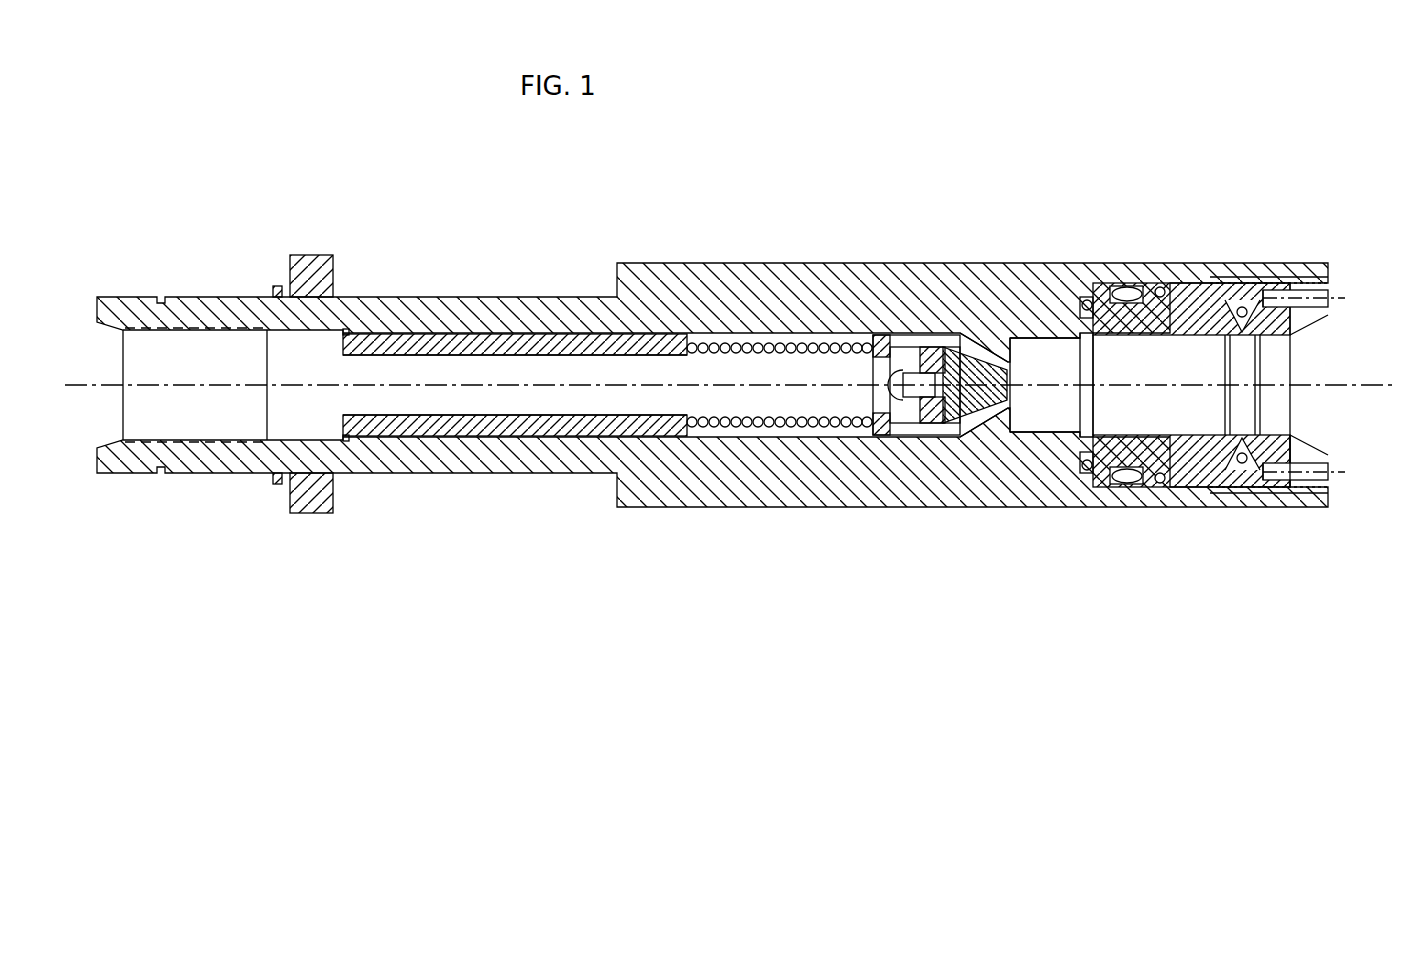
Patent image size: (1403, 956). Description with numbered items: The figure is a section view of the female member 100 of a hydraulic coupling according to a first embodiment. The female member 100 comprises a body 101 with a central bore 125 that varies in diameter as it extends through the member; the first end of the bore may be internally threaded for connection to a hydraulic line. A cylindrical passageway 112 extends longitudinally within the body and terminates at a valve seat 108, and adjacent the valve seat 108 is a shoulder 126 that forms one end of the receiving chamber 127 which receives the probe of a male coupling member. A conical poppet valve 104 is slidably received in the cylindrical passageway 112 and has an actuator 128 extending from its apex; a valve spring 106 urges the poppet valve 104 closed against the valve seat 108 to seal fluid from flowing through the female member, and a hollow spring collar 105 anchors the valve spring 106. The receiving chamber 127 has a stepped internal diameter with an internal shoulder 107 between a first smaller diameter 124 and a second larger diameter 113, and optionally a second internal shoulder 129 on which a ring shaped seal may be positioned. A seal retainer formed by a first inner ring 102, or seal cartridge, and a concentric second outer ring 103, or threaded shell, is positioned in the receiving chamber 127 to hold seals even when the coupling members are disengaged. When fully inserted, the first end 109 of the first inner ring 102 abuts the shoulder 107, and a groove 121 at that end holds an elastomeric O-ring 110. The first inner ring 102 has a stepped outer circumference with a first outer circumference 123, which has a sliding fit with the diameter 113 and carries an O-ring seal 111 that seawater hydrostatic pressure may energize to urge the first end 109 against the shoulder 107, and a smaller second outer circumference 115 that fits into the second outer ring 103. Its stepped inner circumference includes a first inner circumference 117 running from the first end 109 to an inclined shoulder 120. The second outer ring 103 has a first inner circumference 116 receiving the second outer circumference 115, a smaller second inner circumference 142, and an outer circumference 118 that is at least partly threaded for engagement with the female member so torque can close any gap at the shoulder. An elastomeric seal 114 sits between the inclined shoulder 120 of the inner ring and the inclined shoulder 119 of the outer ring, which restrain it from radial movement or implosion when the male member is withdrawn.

The female member 100 is at (788, 197).
The body 101 is at (758, 508).
The first inner ring 102 is at (1180, 440).
The second outer ring 103 is at (1283, 450).
The poppet valve 104 is at (987, 397).
The hollow spring collar 105 is at (487, 427).
The valve spring 106 is at (703, 423).
The internal shoulder 107 is at (1068, 300).
The valve seat 108 is at (925, 335).
The first end 109 is at (1082, 458).
The elastomeric O-ring 110 is at (1050, 300).
The O-ring seal 111 is at (1123, 290).
The cylindrical passageway 112 is at (405, 432).
The second larger diameter 113 is at (1170, 300).
The elastomeric seal 114 is at (1242, 462).
The second outer circumference 115 is at (1207, 290).
The first inner circumference 116 is at (1245, 300).
The first inner circumference 117 is at (1165, 450).
The outer circumference 118 is at (1262, 472).
The inclined shoulder 119 is at (1268, 300).
The inclined shoulder 120 is at (1230, 460).
The groove 121 is at (1278, 445).
The first outer circumference 123 is at (1093, 460).
The first smaller diameter 124 is at (972, 290).
The central bore 125 is at (420, 362).
The shoulder 126 is at (1015, 425).
The receiving chamber 127 is at (1048, 425).
The actuator 128 is at (962, 440).
The second internal shoulder 129 is at (985, 295).
The second inner circumference 142 is at (1310, 467).